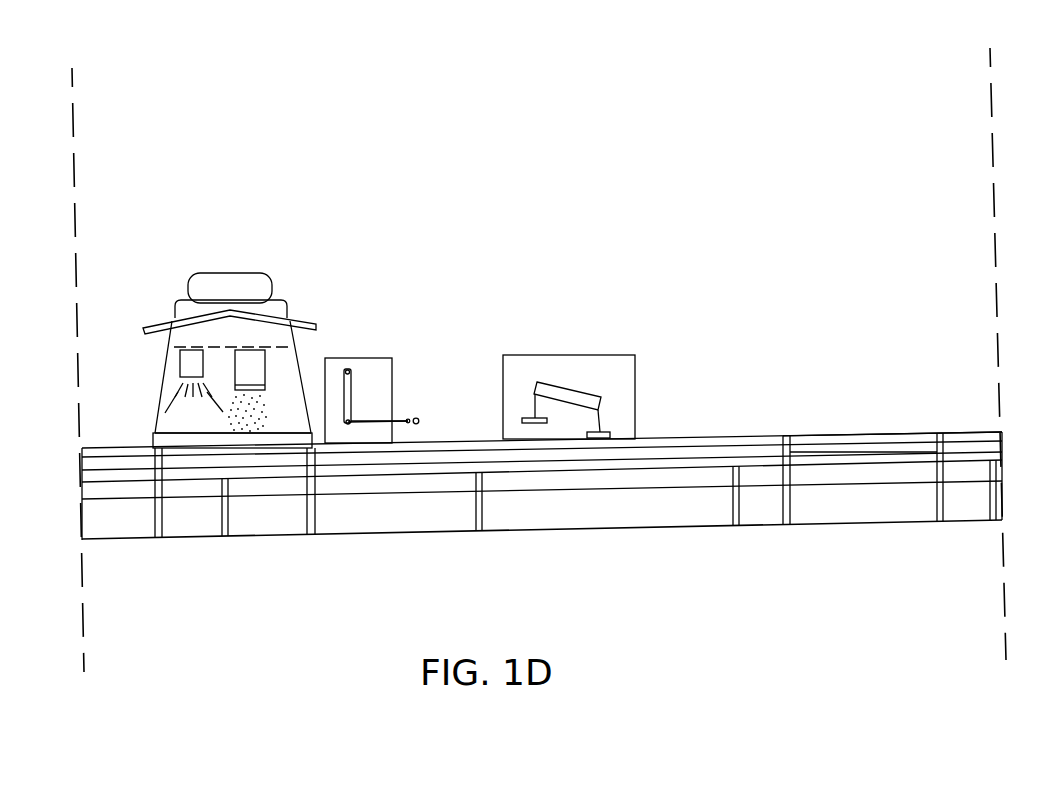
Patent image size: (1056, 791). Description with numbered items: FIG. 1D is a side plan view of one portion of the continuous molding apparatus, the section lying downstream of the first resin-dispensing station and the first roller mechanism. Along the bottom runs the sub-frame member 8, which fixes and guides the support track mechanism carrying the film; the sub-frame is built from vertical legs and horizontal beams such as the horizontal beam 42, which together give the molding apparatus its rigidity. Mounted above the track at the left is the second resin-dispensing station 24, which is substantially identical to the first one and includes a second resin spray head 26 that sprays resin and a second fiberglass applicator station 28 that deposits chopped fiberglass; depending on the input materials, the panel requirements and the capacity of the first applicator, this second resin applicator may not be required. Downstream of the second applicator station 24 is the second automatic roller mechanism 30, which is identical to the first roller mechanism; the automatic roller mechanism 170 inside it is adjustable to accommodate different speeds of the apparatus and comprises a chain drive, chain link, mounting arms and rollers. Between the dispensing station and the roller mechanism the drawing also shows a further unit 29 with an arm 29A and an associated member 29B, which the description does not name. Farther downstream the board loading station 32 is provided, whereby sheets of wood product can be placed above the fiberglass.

The sub-frame member 8 is at (208, 544).
The second resin-dispensing station 24 is at (230, 266).
The second resin spray head 26 is at (190, 365).
The second fiberglass applicator station 28 is at (260, 368).
The handling station 29 is at (388, 356).
The pivot arm 29A is at (416, 418).
The arm actuator 29B is at (378, 423).
The second automatic roller mechanism 30 is at (577, 351).
The automatic roller mechanism 170 is at (574, 394).
The board loading station 32 is at (884, 406).
The horizontal beam 42 is at (813, 458).